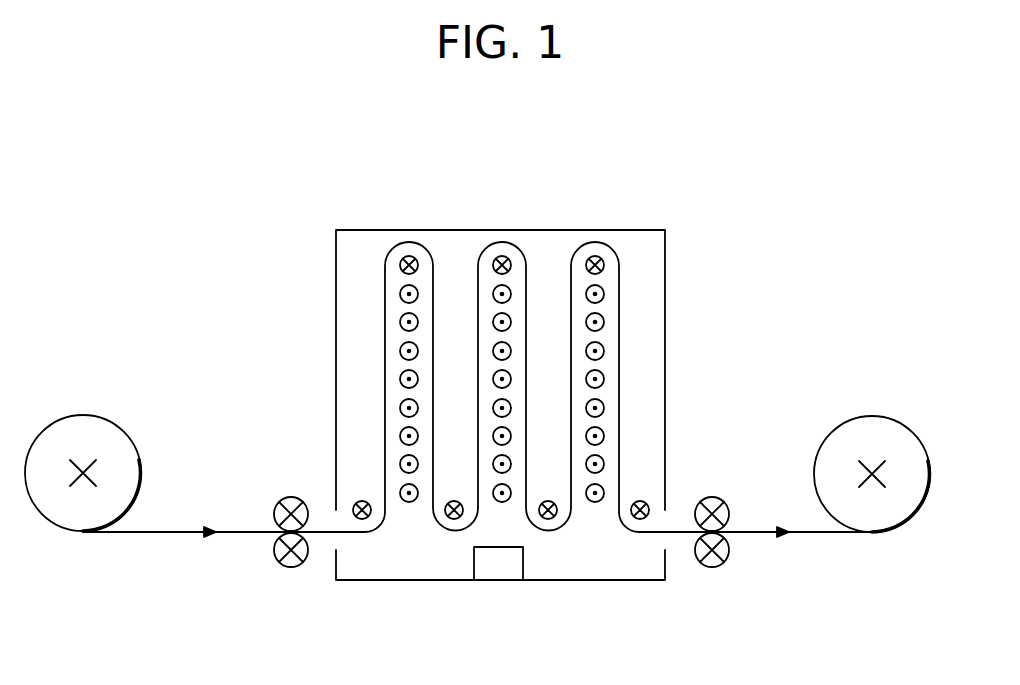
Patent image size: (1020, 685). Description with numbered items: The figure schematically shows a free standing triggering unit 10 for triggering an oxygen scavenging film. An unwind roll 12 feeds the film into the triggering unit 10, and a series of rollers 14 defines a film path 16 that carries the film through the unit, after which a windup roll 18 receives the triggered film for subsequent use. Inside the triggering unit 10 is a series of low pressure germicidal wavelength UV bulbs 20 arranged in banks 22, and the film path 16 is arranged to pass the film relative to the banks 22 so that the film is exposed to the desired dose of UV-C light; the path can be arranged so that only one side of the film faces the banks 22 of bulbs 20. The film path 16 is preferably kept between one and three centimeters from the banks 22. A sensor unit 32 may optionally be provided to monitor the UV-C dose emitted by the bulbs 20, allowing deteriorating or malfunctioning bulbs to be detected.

The triggering unit 10 is at (615, 197).
The unwind roll 12 is at (88, 418).
The rollers 14 is at (291, 497).
The film path 16 is at (385, 378).
The windup roll 18 is at (868, 417).
The low pressure germicidal wavelength UV bulbs 20 is at (604, 292).
The banks 22 is at (507, 304).
The sensor unit 32 is at (496, 566).